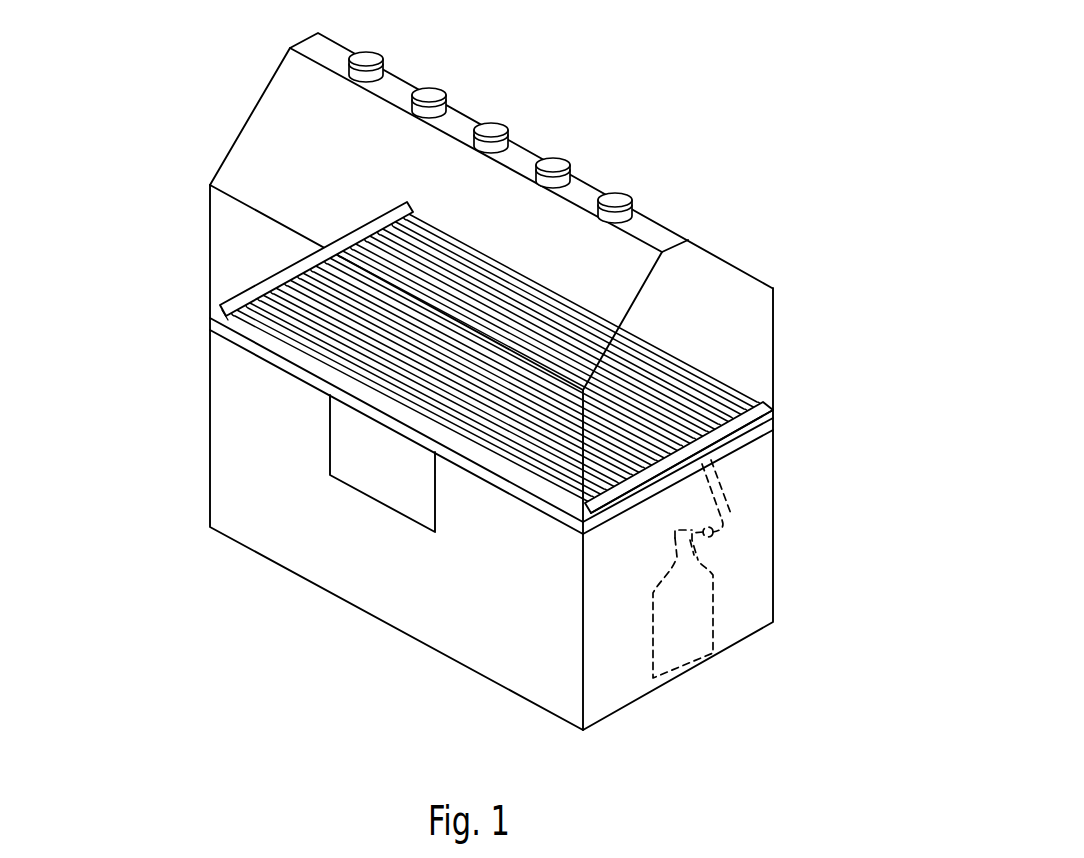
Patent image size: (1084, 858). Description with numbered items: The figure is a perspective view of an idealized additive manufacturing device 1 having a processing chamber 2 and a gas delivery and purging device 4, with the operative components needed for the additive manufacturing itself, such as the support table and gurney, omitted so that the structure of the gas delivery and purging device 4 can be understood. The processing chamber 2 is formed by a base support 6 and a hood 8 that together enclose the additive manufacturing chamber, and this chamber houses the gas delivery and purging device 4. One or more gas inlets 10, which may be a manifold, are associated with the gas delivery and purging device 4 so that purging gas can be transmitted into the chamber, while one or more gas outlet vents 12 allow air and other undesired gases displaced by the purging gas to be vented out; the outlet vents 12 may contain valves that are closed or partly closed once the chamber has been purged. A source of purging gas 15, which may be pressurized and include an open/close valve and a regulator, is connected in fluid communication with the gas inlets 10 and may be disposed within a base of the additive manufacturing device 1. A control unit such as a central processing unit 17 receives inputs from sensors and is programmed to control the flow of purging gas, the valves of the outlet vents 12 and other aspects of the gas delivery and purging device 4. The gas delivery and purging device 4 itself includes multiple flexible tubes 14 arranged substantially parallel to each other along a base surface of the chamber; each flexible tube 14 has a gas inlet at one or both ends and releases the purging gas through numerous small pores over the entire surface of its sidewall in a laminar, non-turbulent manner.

The additive manufacturing device 1 is at (137, 271).
The processing chamber 2 is at (745, 334).
The gas delivery and purging device 4 is at (695, 314).
The base support 6 is at (315, 367).
The hood 8 is at (268, 86).
The gas inlets 10 is at (740, 437).
The gas outlet vents 12 is at (640, 192).
The flexible tube 14 is at (273, 333).
The purging gas source 15 is at (702, 633).
The central processing unit 17 is at (407, 483).